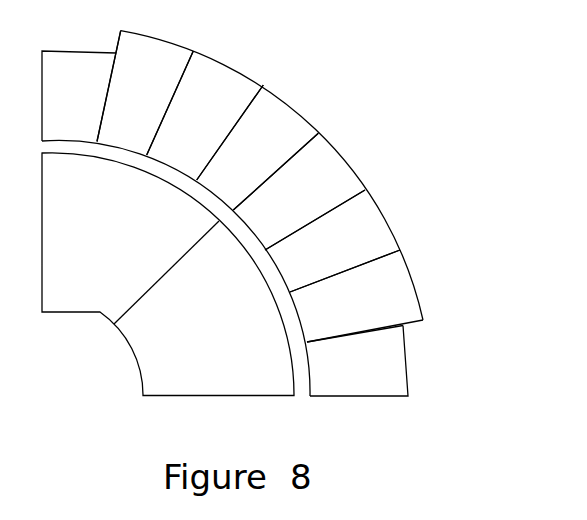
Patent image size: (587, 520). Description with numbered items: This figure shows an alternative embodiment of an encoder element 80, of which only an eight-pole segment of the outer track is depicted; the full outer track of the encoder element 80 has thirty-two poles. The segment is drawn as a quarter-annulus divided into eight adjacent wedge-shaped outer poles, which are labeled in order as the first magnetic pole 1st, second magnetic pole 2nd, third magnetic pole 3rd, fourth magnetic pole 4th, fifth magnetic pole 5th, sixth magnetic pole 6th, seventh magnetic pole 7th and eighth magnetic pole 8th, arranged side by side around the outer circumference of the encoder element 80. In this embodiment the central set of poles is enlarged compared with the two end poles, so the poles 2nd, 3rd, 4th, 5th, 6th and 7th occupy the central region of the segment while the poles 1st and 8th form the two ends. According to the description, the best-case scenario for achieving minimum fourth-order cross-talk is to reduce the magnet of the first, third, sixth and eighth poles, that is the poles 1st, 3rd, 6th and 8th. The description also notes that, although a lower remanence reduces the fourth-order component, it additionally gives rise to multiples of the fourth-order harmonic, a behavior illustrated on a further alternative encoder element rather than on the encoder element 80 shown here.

The encoder element 80 is at (302, 213).
The first magnetic pole 1st is at (90, 110).
The second magnetic pole 2nd is at (163, 102).
The third magnetic pole 3rd is at (218, 136).
The fourth magnetic pole 4th is at (270, 166).
The fifth magnetic pole 5th is at (327, 204).
The sixth magnetic pole 6th is at (344, 262).
The seventh magnetic pole 7th is at (364, 317).
The eighth magnetic pole 8th is at (374, 381).